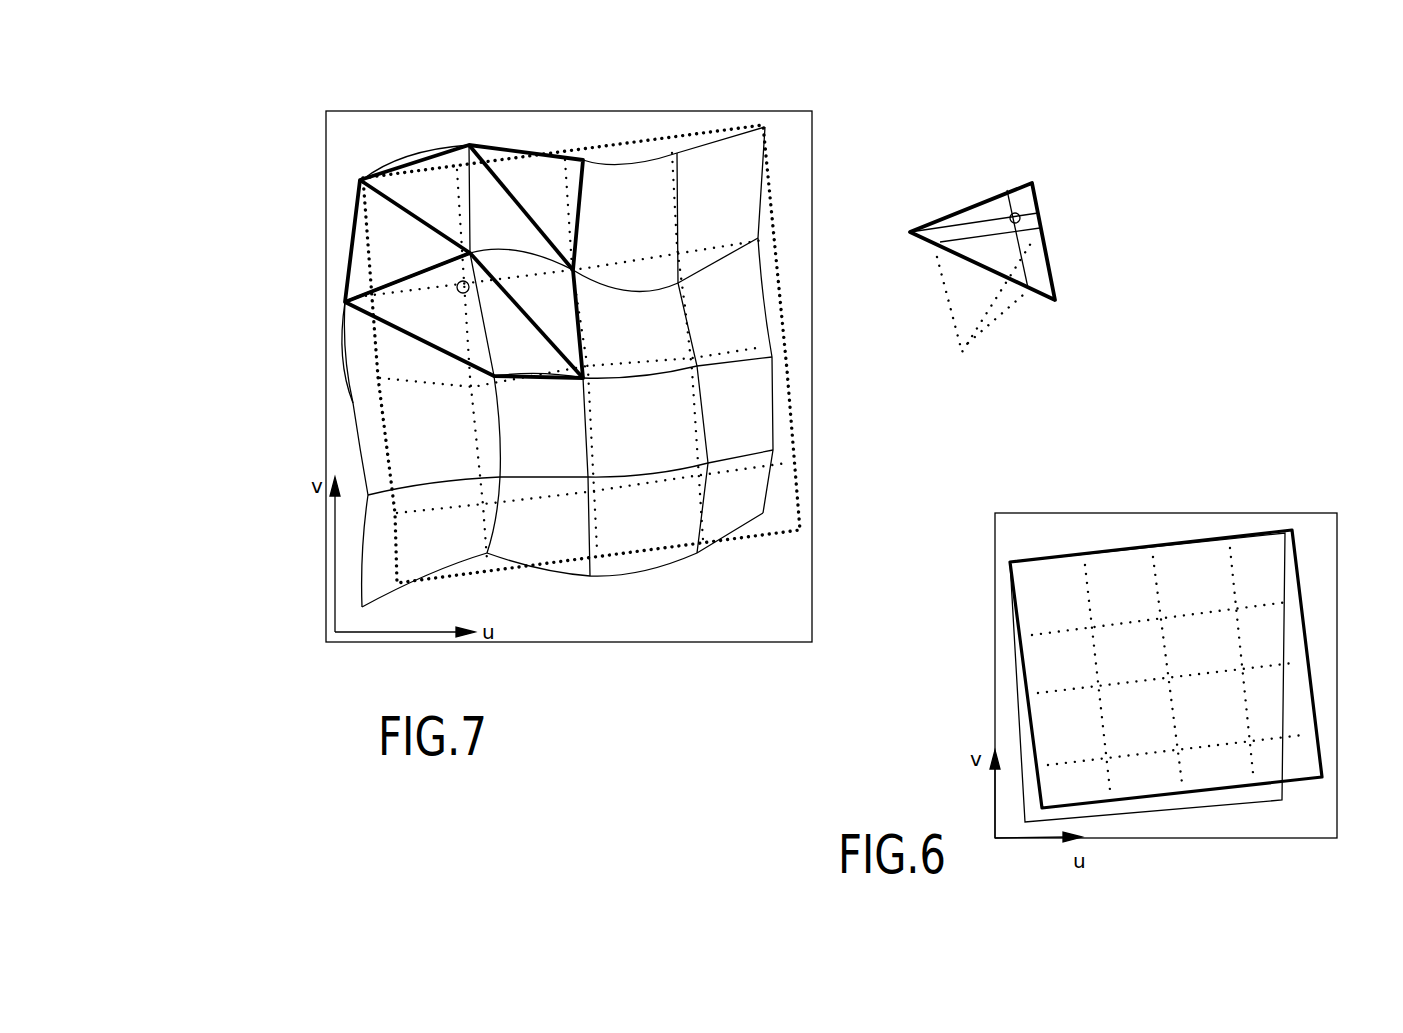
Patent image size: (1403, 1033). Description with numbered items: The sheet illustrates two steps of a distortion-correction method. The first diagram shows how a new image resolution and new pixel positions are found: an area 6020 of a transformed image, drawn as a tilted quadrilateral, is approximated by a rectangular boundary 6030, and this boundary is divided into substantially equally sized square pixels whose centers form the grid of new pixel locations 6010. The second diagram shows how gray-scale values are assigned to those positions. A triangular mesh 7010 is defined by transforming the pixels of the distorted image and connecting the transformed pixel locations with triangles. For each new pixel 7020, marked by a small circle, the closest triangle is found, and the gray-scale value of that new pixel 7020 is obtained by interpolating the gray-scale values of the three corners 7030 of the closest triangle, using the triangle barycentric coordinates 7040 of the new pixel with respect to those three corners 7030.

In FIG. 7, the triangular mesh 7010 is at (485, 343).
In FIG. 7, the new pixel 7020 is at (468, 283).
In FIG. 7, the three corners of the closest triangle 7030 is at (910, 232).
In FIG. 7, the triangle barycentric coordinates 7040 is at (1012, 317).
In FIG. 6, the new pixel locations 6010 is at (1165, 618).
In FIG. 6, the area of a transformed image 6020 is at (1210, 810).
In FIG. 6, the rectangular boundary 6030 is at (1303, 780).